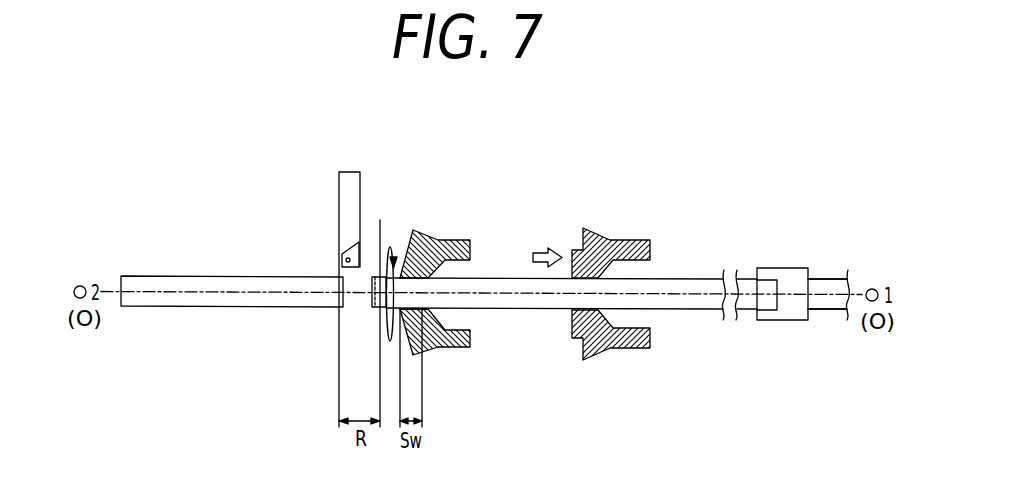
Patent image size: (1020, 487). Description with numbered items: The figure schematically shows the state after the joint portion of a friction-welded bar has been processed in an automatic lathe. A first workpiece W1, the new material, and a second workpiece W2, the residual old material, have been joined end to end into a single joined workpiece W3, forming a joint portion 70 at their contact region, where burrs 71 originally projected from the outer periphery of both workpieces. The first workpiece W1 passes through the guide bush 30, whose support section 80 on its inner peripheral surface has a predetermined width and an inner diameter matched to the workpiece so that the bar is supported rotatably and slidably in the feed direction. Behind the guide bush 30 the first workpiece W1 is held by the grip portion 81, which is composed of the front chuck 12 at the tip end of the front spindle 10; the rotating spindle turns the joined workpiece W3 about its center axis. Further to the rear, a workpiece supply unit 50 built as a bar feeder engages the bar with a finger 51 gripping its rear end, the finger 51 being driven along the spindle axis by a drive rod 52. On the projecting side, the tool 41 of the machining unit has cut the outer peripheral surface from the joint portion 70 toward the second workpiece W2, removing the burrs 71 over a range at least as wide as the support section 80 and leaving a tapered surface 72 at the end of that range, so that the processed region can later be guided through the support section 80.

The front spindle 10 is at (630, 244).
The front chuck 12 is at (630, 283).
The guide bush 30 is at (432, 243).
The tool 41 is at (332, 280).
The workpiece supply unit 50 is at (818, 245).
The finger 51 is at (787, 267).
The drive rod 52 is at (829, 278).
The joint portion 70 is at (370, 278).
The burrs 71 is at (372, 313).
The tapered surface 72 is at (339, 284).
The support section 80 is at (418, 309).
The grip portion 81 is at (623, 241).
The first workpiece W1 is at (498, 286).
The second workpiece W2 is at (206, 283).
The joined workpiece W3 is at (709, 275).